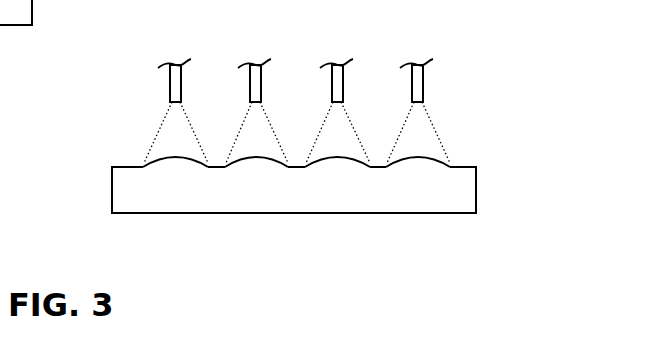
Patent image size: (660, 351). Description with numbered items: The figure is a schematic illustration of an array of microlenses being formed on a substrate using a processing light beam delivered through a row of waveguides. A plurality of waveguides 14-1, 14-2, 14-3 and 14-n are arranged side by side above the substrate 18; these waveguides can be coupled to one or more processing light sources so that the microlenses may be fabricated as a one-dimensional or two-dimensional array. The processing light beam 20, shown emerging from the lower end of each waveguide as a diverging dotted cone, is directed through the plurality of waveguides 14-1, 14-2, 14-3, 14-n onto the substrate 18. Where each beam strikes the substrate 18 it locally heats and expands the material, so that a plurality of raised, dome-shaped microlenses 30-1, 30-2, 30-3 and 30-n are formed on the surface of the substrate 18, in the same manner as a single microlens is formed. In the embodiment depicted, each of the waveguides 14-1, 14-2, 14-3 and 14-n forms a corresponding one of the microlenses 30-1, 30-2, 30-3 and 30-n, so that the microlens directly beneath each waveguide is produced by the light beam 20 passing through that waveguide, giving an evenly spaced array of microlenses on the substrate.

The waveguide 14-1 is at (176, 77).
The waveguide 14-2 is at (256, 77).
The waveguide 14-3 is at (338, 77).
The waveguide 14-n is at (418, 77).
The substrate 18 is at (123, 165).
The processing light beam 20 is at (438, 127).
The microlens 30-1 is at (180, 162).
The microlens 30-2 is at (257, 162).
The microlens 30-3 is at (343, 162).
The microlens 30-n is at (425, 162).